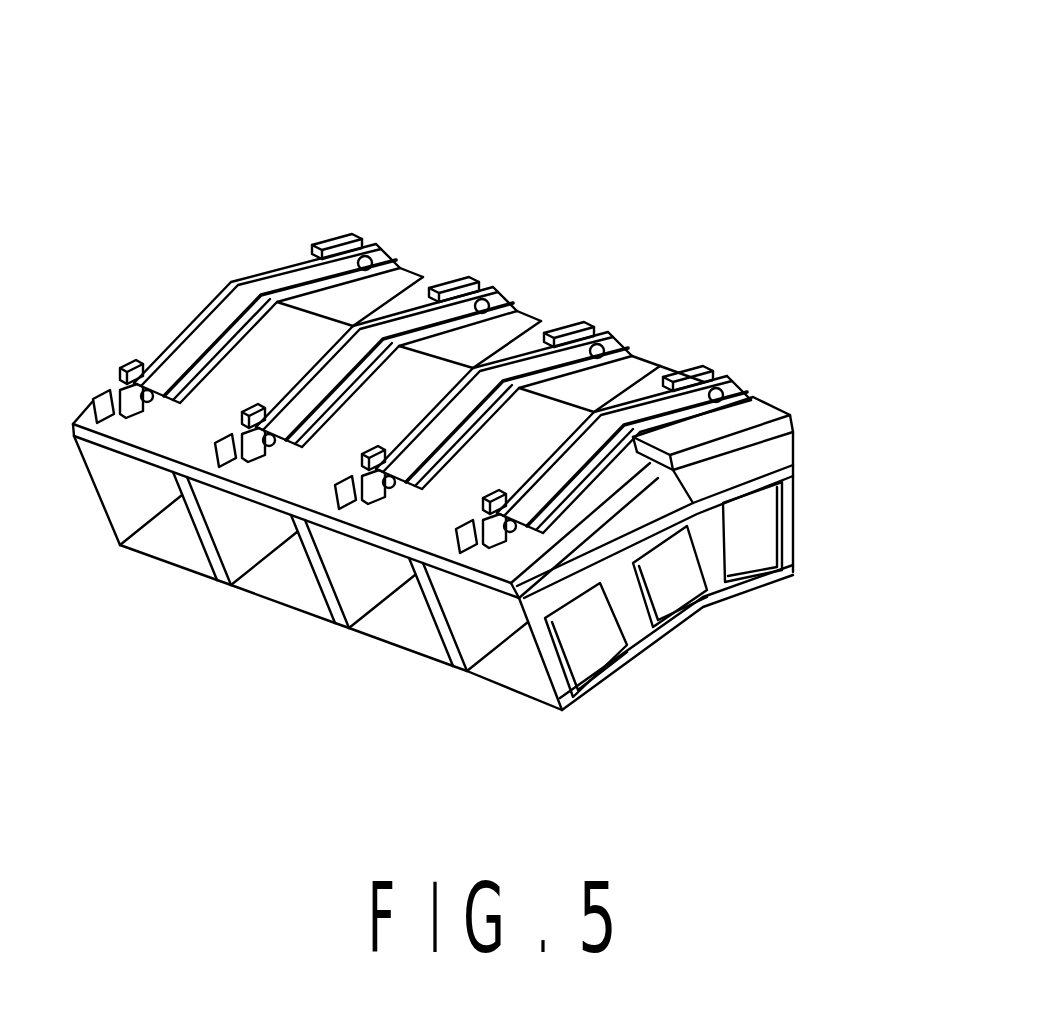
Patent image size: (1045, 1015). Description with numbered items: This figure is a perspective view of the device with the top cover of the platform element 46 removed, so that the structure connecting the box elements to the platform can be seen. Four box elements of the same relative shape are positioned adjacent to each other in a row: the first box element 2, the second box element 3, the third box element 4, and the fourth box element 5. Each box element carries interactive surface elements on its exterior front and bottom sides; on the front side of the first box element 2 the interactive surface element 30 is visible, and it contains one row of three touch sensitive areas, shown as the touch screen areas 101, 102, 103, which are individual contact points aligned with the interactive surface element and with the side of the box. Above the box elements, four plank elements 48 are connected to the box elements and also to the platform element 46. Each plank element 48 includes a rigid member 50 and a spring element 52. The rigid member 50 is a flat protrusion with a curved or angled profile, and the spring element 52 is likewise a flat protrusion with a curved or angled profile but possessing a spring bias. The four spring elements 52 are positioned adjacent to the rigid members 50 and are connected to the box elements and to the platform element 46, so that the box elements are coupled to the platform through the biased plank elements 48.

The first box element 2 is at (472, 679).
The second box element 3 is at (364, 631).
The third box element 4 is at (250, 591).
The fourth box element 5 is at (142, 540).
The interactive surface element 30 is at (705, 586).
The platform element 46 is at (379, 417).
The plank element 48 is at (520, 276).
The rigid member 50 is at (445, 335).
The spring element 52 is at (863, 332).
The touch screen area 101 is at (636, 679).
The touch screen area 102 is at (726, 618).
The touch screen area 103 is at (808, 564).